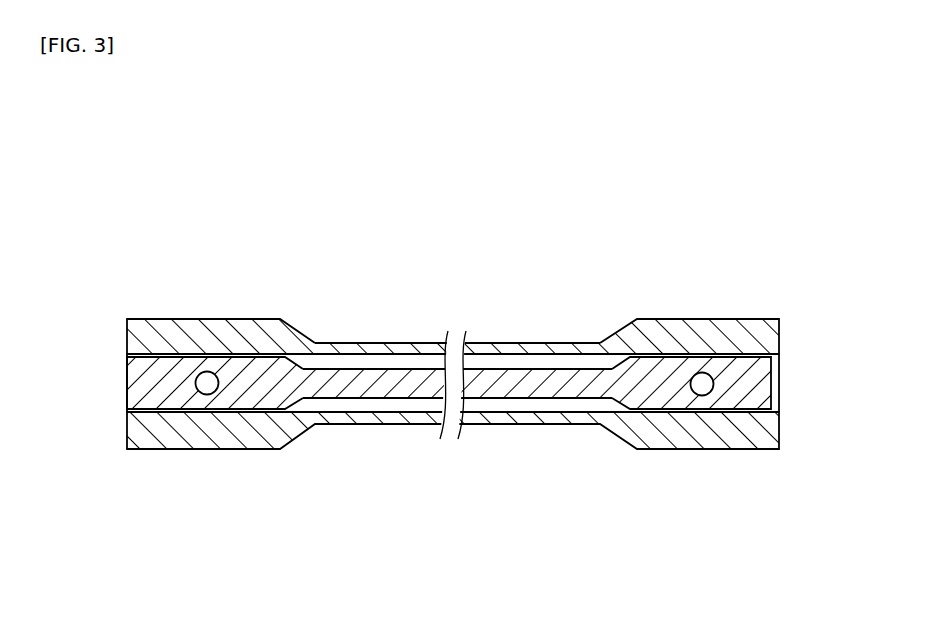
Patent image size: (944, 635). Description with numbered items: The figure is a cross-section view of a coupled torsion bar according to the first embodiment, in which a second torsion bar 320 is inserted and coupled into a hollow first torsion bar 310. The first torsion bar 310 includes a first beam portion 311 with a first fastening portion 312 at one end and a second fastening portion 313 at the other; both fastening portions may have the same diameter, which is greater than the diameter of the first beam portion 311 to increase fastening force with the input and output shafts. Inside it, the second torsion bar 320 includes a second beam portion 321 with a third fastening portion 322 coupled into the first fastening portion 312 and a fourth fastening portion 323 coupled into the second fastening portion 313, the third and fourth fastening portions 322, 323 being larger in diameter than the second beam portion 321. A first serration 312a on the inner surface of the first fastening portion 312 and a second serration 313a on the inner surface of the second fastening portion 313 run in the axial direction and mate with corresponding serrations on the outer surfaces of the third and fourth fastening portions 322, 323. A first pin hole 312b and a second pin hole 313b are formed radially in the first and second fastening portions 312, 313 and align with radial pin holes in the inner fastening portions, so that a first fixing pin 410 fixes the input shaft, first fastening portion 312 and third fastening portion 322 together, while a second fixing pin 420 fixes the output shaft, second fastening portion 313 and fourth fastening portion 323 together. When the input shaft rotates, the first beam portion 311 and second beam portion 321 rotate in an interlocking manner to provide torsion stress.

The first torsion bar 310 is at (448, 356).
The first beam portion 311 is at (410, 343).
The first fastening portion 312 is at (692, 332).
The first serration 312a is at (742, 354).
The first pin hole 312b is at (718, 395).
The second fastening portion 313 is at (211, 335).
The second serration 313a is at (255, 354).
The second pin hole 313b is at (223, 398).
The second torsion bar 320 is at (449, 434).
The second beam portion 321 is at (507, 387).
The third fastening portion 322 is at (667, 397).
The fourth fastening portion 323 is at (173, 403).
The first fixing pin 410 is at (713, 382).
The second fixing pin 420 is at (207, 382).